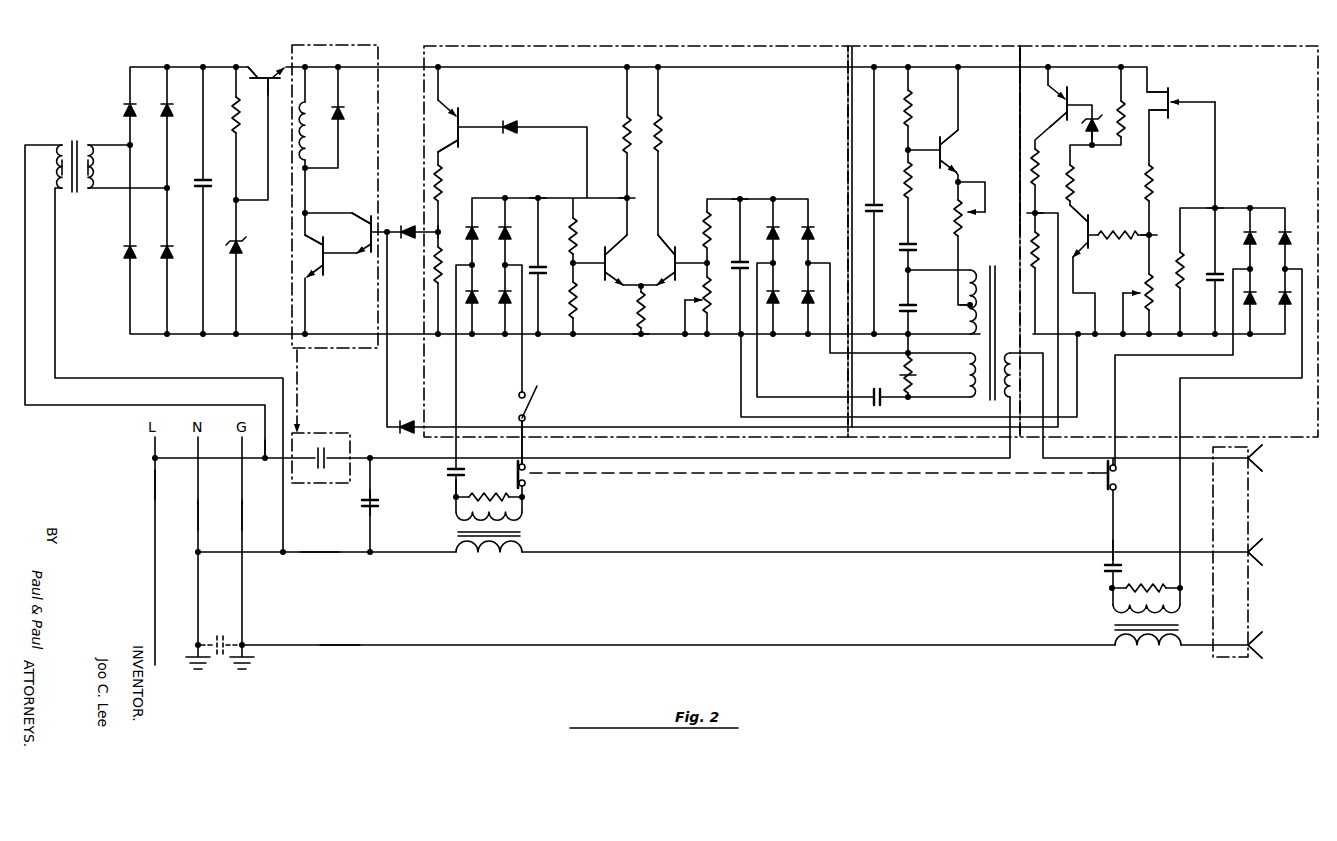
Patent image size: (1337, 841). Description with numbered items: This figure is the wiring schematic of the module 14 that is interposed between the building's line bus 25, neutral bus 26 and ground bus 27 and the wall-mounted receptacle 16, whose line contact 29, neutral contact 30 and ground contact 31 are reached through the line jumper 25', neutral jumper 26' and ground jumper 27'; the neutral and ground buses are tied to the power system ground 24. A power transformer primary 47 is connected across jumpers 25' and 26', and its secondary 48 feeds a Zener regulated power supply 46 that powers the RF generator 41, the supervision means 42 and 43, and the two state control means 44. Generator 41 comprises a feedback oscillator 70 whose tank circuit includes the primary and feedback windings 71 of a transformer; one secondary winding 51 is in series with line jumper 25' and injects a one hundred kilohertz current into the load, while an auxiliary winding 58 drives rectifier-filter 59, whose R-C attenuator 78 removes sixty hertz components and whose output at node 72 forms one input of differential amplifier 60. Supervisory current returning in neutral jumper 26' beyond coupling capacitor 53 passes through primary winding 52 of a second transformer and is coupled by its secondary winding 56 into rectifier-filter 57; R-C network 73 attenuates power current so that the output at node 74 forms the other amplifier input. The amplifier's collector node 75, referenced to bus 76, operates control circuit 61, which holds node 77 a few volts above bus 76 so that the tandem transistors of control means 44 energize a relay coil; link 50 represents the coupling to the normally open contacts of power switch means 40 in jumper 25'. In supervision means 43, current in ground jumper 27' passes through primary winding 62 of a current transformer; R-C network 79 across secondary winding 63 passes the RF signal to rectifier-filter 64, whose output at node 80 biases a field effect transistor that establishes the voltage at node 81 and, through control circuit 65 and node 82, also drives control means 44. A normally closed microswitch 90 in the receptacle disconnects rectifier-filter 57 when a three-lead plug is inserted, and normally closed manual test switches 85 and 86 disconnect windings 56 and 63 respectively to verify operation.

The module 14 is at (157, 202).
The receptacle 16 is at (1215, 660).
The power system ground 24 is at (191, 662).
The line bus 25 is at (131, 485).
The line jumper 25' is at (260, 472).
The neutral bus 26 is at (181, 515).
The neutral jumper 26' is at (320, 538).
The ground bus 27 is at (226, 524).
The ground jumper 27' is at (340, 625).
The line contact 29 is at (1262, 470).
The neutral contact 30 is at (1262, 543).
The ground contact 31 is at (1262, 658).
The power switch means 40 is at (326, 441).
The RF generator 41 is at (953, 46).
The supervision means 42 is at (700, 46).
The supervision means 43 is at (1218, 46).
The two state control means 44 is at (355, 176).
The Zener regulated power supply 46 is at (141, 232).
The primary 47 is at (59, 170).
The secondary 48 is at (94, 170).
The link 50 is at (303, 366).
The secondary winding 51 is at (1004, 356).
The primary winding 52 is at (505, 555).
The coupling capacitor 53 is at (371, 507).
The secondary winding 56 is at (462, 512).
The rectifier-filter 57 is at (515, 271).
The auxiliary winding 58 is at (975, 361).
The rectifier-filter 59 is at (803, 247).
The differential amplifier 60 is at (652, 222).
The control circuit 61 is at (460, 121).
The primary winding 62 is at (1150, 650).
The secondary winding 63 is at (1125, 612).
The rectifier-filter 64 is at (1253, 253).
The control circuit 65 is at (1021, 136).
The feedback oscillator 70 is at (974, 187).
The primary and feedback windings 71 is at (966, 310).
The node 72 is at (741, 197).
The R-C network 73 is at (478, 487).
The node 74 is at (541, 200).
The node 75 is at (628, 197).
The bus 76 is at (642, 336).
The node 77 is at (440, 229).
The R-C attenuator 78 is at (878, 376).
The R-C network 79 is at (1138, 556).
The node 80 is at (1216, 207).
The node 81 is at (1151, 233).
The node 82 is at (1035, 213).
The manual test switch 85 is at (532, 481).
The manual test switch 86 is at (1105, 477).
The microswitch 90 is at (1100, 118).